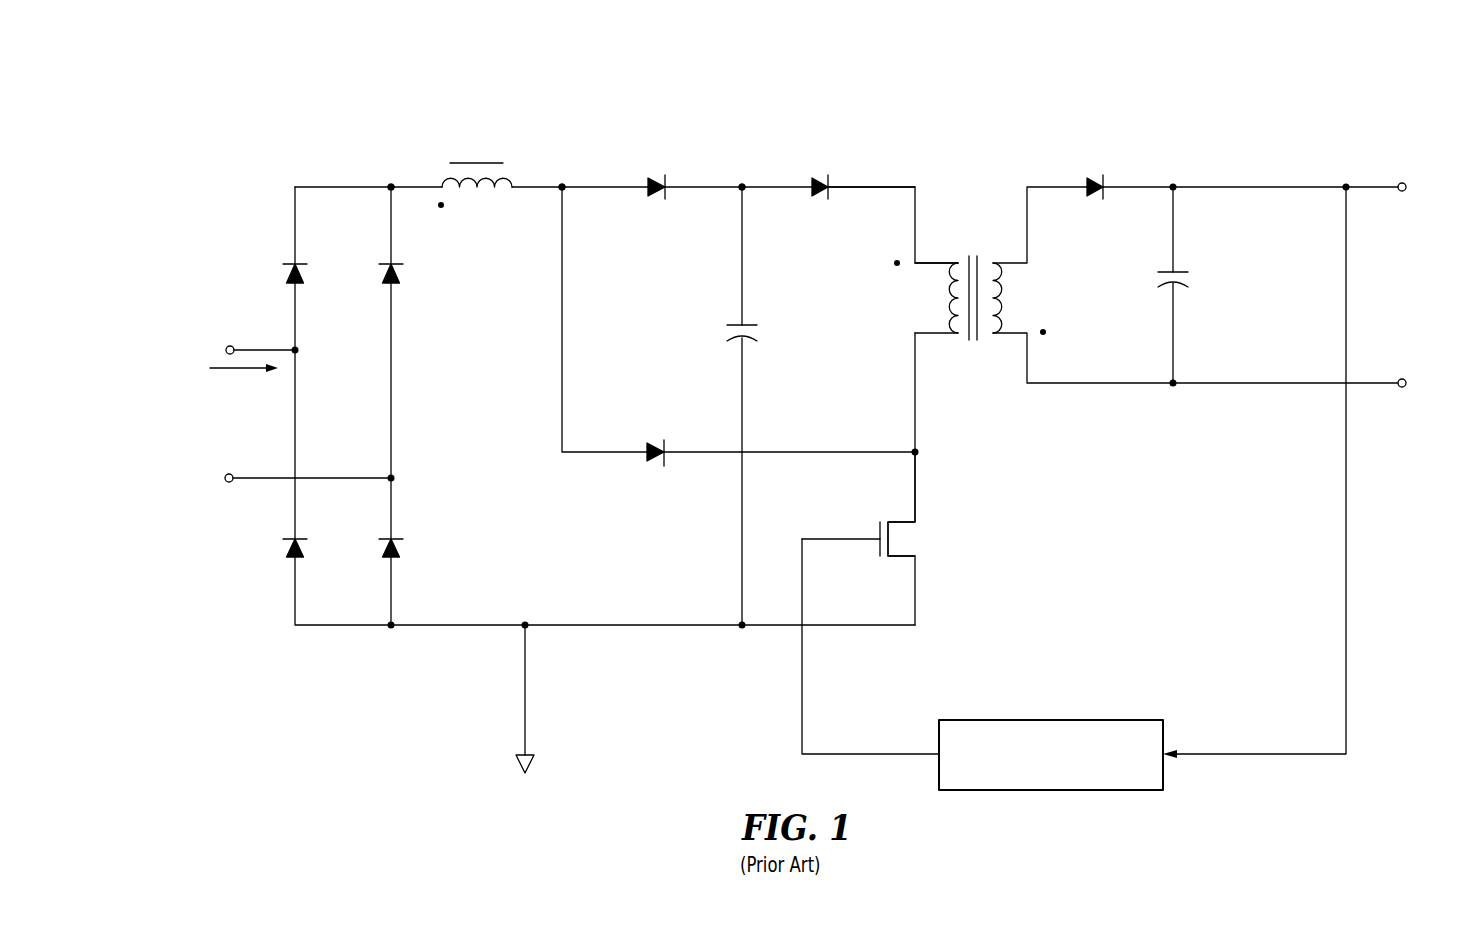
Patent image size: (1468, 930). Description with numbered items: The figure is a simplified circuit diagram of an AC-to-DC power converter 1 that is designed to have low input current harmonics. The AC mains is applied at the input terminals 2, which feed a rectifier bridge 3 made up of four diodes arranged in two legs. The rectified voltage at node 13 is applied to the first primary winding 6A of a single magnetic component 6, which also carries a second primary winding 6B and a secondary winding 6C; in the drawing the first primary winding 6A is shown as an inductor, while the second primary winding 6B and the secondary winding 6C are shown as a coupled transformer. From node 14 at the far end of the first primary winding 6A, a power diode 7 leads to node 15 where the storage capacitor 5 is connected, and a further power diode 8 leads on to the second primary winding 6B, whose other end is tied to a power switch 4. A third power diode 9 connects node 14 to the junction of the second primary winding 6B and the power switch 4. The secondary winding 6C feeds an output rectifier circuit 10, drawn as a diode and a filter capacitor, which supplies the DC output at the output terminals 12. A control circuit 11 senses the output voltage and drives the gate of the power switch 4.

The AC-to-DC power converter 1 is at (898, 98).
The input terminals 2 is at (230, 345).
The rectifier bridge 3 is at (321, 274).
The power switch 4 is at (900, 521).
The storage capacitor 5 is at (740, 322).
The magnetic component 6 is at (715, 264).
The first primary winding 6A is at (459, 173).
The second primary winding 6B is at (938, 262).
The secondary winding 6C is at (1007, 270).
The power diode 7 is at (652, 182).
The power diode 8 is at (815, 180).
The power diode 9 is at (651, 462).
The output rectifier circuit 10 is at (1088, 178).
The control circuit 11 is at (1137, 791).
The output terminals 12 is at (1406, 184).
The rectified voltage node VR 13 is at (391, 186).
The node VX 14 is at (562, 185).
The capacitor voltage node VC 15 is at (742, 185).